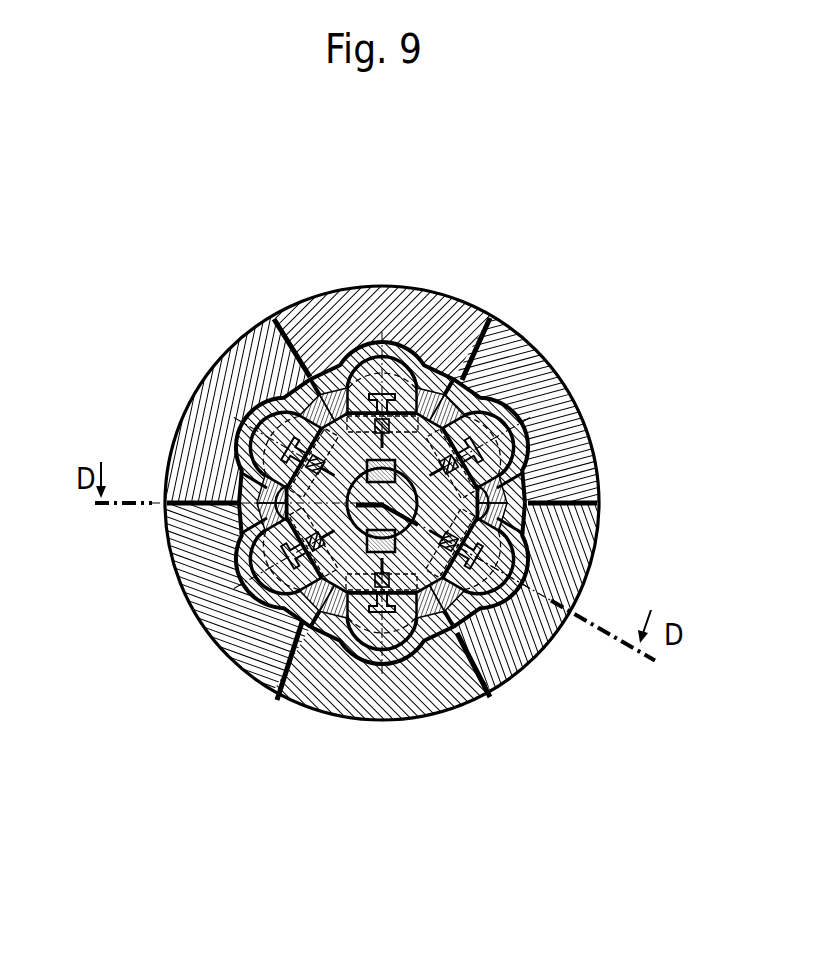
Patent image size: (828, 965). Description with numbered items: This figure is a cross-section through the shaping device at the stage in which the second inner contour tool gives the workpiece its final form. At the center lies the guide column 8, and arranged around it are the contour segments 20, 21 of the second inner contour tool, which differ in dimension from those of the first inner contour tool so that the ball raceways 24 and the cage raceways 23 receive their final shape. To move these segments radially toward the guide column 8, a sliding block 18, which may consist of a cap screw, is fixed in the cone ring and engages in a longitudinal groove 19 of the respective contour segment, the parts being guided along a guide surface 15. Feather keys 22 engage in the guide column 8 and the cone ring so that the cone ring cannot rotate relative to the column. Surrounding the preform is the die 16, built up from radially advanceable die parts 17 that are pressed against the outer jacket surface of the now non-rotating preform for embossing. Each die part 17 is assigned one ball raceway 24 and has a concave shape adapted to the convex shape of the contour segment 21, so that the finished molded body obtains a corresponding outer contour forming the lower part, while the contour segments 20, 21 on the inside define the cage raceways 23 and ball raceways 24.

The guide column 8 is at (416, 478).
The guide surface 15 is at (333, 611).
The die 16 is at (457, 240).
The die part 17 is at (456, 310).
The sliding block 18 is at (300, 461).
The longitudinal groove 19 is at (506, 498).
The contour segment 20 is at (318, 413).
The contour segment 21 is at (262, 410).
The feather keys 22 is at (396, 462).
The cage raceway 23 is at (322, 603).
The ball raceway 24 is at (305, 596).